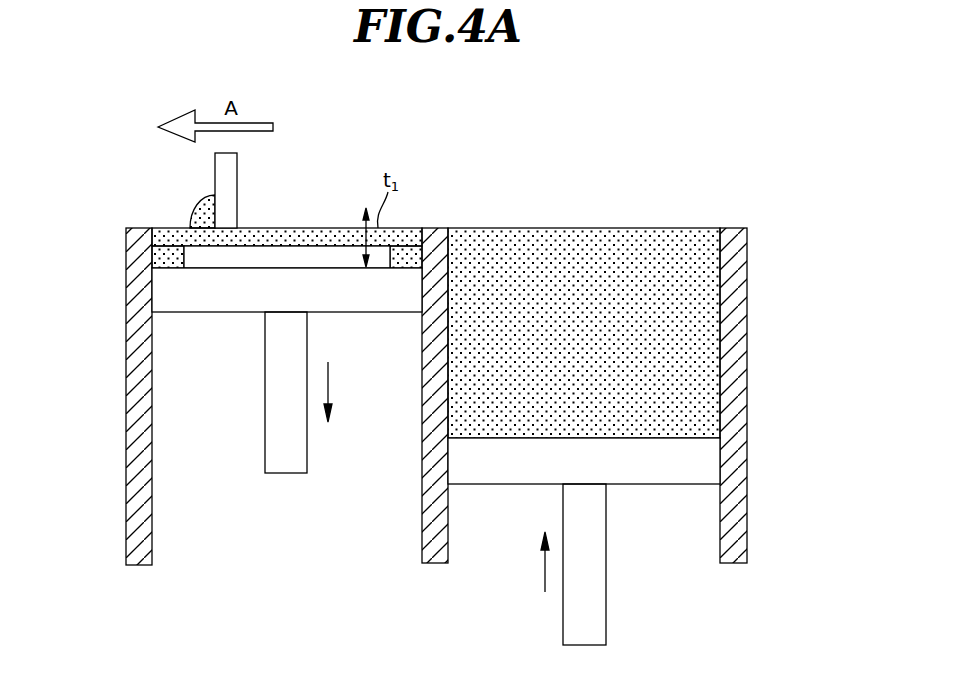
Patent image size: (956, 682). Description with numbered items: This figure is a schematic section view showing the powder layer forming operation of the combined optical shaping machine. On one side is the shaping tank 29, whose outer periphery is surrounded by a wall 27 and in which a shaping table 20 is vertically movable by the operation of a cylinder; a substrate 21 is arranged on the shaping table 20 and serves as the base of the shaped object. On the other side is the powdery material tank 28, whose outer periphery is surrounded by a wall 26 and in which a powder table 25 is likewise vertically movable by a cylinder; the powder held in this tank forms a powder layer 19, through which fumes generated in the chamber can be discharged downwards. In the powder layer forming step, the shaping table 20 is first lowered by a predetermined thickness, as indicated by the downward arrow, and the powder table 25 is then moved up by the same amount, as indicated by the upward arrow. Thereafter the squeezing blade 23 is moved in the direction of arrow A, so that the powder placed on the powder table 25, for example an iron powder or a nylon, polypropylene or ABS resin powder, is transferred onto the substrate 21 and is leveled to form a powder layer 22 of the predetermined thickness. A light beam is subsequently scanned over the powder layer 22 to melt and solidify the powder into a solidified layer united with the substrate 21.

The powder layer 19 is at (618, 233).
The shaping table 20 is at (187, 302).
The substrate 21 is at (187, 253).
The powder layer 22 is at (293, 228).
The squeezing blade 23 is at (215, 177).
The powder table 25 is at (710, 463).
The wall 26 is at (748, 325).
The wall 27 is at (130, 452).
The powdery material tank 28 is at (584, 155).
The shaping tank 29 is at (350, 145).